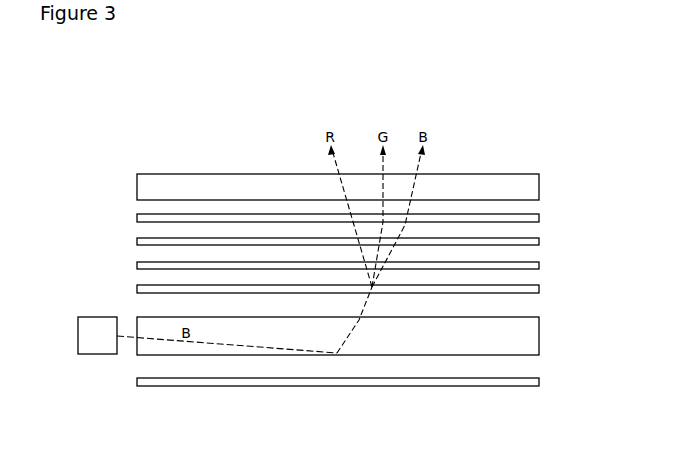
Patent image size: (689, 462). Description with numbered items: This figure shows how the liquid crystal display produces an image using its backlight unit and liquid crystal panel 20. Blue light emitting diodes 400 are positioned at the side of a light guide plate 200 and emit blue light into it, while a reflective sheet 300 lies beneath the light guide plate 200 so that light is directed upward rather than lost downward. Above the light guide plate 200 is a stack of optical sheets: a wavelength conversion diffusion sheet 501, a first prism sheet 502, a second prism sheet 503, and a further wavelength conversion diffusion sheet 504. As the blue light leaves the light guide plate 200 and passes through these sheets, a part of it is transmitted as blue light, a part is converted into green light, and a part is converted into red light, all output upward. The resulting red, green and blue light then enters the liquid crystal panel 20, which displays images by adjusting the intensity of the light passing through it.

The liquid crystal panel 20 is at (535, 186).
The wavelength conversion diffusion sheet 504 is at (535, 218).
The second prism sheet 503 is at (535, 242).
The first prism sheet 502 is at (535, 266).
The wavelength conversion diffusion sheet 501 is at (535, 289).
The light guide plate 200 is at (535, 336).
The reflective sheet 300 is at (535, 382).
The light emitting diodes 400 is at (98, 323).